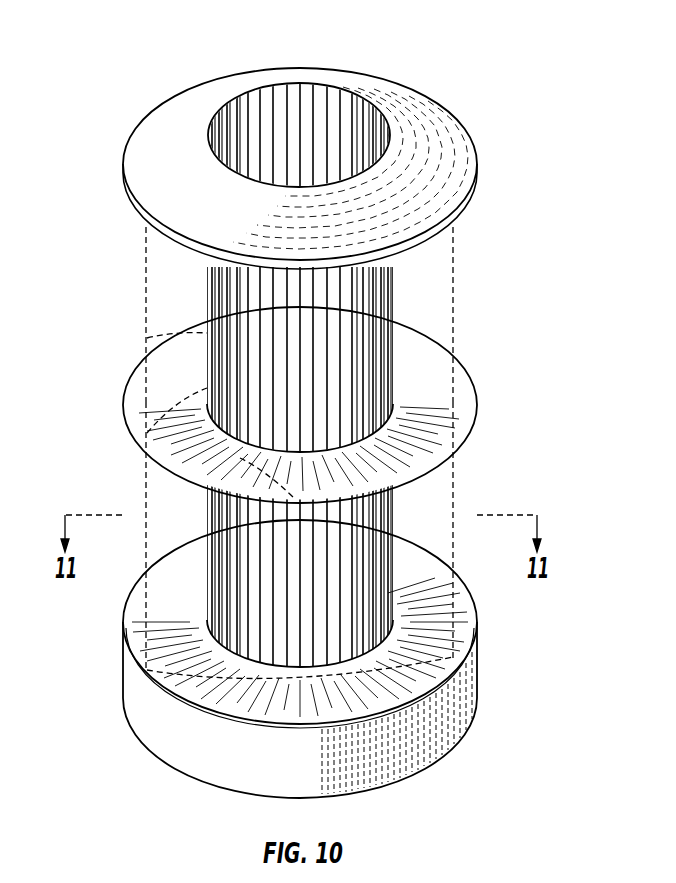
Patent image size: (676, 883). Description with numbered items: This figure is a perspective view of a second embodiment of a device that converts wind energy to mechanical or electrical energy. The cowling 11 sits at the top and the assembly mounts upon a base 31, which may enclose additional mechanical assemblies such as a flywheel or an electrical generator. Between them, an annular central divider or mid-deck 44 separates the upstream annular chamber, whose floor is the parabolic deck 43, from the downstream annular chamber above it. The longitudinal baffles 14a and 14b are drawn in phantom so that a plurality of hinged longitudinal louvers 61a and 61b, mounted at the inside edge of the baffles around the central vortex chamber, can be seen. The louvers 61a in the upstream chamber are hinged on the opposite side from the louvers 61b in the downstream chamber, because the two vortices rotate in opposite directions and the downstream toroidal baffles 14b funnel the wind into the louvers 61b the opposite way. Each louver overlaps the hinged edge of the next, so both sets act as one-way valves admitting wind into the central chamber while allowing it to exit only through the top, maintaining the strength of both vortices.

The cowling 11 is at (432, 106).
The upstream longitudinal baffles 14a is at (243, 457).
The downstream toroidal baffles 14b is at (453, 283).
The annular central divider (mid-deck) 44 is at (475, 377).
The parabolic deck 43 is at (477, 615).
The base 31 is at (475, 673).
The upstream hinged longitudinal louvers 61a is at (237, 567).
The downstream hinged longitudinal louvers 61b is at (263, 367).